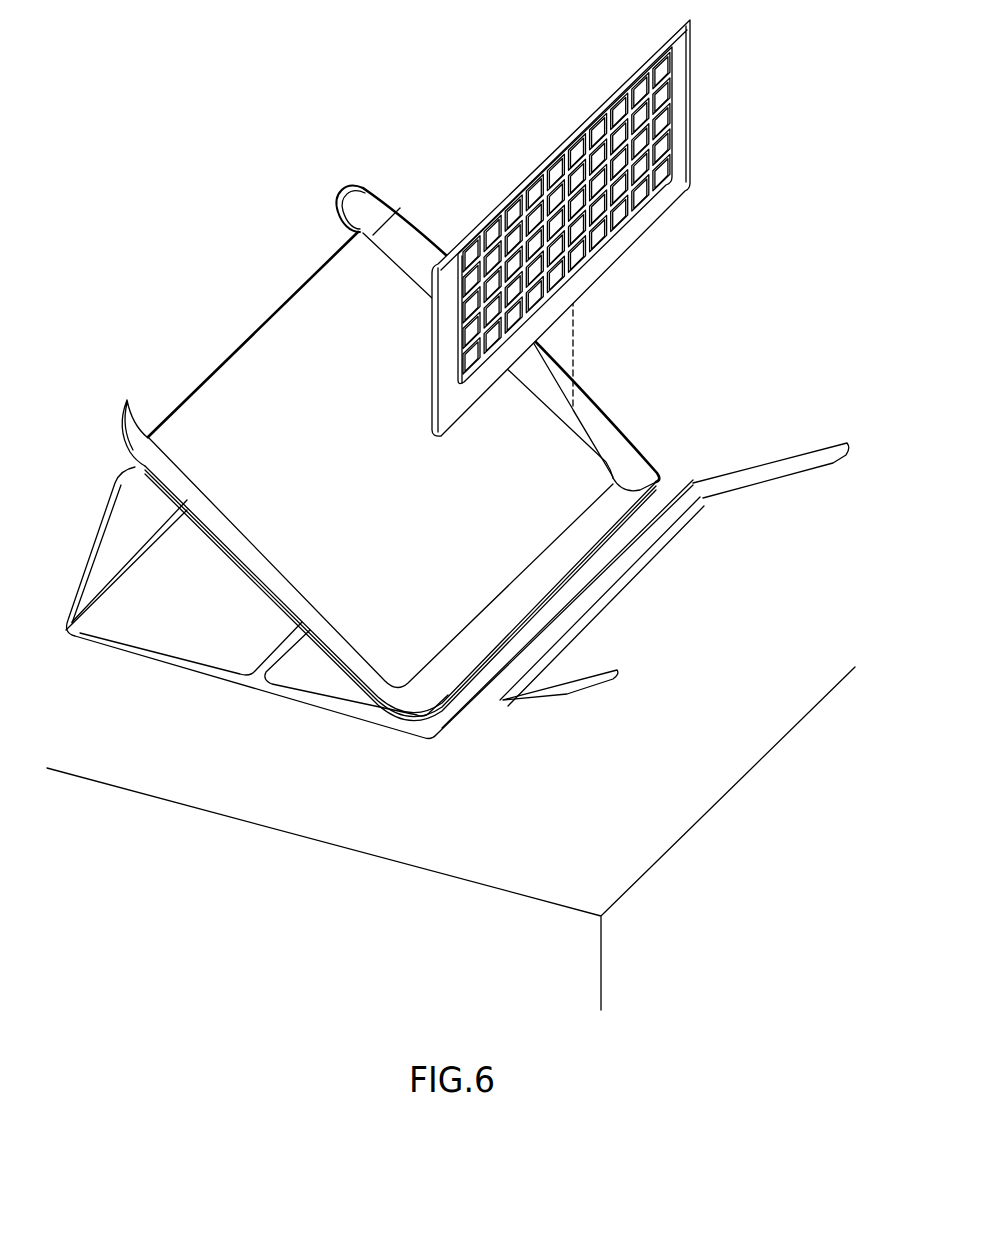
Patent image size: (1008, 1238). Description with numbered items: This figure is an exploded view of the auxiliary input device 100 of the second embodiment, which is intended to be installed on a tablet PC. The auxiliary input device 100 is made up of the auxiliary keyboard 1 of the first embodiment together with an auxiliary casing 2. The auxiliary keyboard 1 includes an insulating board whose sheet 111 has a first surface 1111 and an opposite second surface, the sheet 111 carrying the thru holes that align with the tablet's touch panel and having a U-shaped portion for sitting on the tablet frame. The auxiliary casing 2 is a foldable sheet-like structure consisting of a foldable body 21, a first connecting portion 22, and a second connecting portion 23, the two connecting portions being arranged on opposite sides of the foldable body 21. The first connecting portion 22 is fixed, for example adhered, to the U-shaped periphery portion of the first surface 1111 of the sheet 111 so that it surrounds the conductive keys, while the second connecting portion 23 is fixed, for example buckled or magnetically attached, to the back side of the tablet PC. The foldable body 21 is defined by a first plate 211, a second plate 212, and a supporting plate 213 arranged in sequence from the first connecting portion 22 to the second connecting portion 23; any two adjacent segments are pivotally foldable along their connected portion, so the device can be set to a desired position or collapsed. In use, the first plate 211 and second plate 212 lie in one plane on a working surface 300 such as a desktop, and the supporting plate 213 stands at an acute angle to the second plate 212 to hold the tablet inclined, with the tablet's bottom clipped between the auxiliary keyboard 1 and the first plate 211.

The auxiliary input device 100 is at (700, 303).
The auxiliary keyboard 1 is at (623, 268).
The sheet 111 is at (430, 314).
The first surface 1111 is at (395, 350).
The auxiliary casing 2 is at (763, 472).
The foldable body 21 is at (112, 708).
The first plate 211 is at (307, 670).
The second plate 212 is at (197, 641).
The supporting plate 213 is at (118, 543).
The first connecting portion 22 is at (538, 698).
The second connecting portion 23 is at (118, 414).
The working surface 300 is at (413, 838).